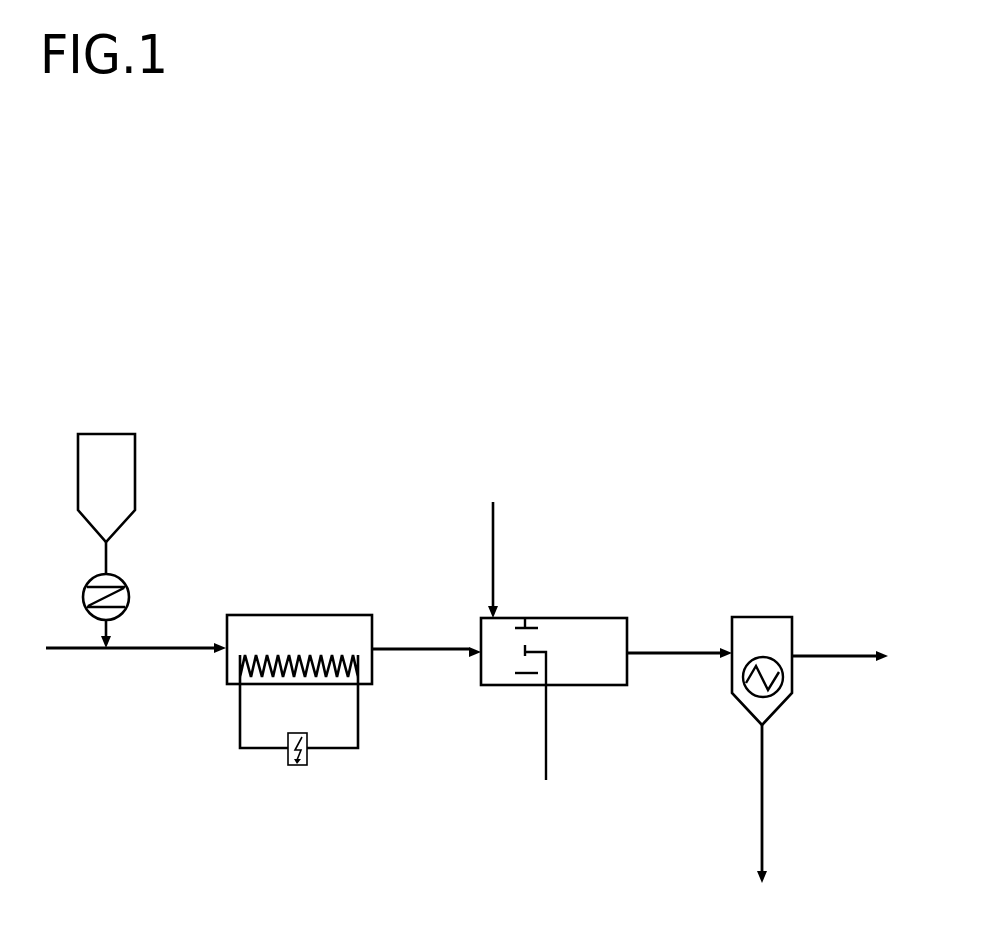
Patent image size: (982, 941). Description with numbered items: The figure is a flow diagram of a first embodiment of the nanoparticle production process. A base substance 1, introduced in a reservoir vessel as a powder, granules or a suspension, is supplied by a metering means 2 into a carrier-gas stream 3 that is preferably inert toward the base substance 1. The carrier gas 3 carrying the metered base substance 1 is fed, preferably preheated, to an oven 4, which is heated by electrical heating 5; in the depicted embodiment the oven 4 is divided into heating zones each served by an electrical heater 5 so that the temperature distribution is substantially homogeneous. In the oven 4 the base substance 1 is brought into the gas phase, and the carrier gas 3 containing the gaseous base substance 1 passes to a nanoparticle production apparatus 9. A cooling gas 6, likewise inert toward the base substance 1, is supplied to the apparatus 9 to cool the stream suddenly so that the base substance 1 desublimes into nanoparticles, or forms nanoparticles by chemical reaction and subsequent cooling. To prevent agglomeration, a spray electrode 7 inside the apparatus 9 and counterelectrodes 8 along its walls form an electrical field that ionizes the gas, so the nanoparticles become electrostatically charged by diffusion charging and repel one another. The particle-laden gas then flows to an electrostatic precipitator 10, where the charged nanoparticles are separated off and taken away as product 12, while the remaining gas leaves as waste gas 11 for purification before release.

The base substance 1 is at (135, 464).
The metering means 2 is at (122, 581).
The carrier-gas stream 3 is at (50, 648).
The oven 4 is at (290, 615).
The electrical heating 5 is at (358, 713).
The cooling gas 6 is at (493, 543).
The spray electrode 7 is at (523, 648).
The counterelectrodes 8 is at (525, 618).
The nanoparticle production apparatus 9 is at (481, 672).
The electrostatic precipitator 10 is at (748, 617).
The waste gas 11 is at (847, 655).
The product 12 is at (762, 797).